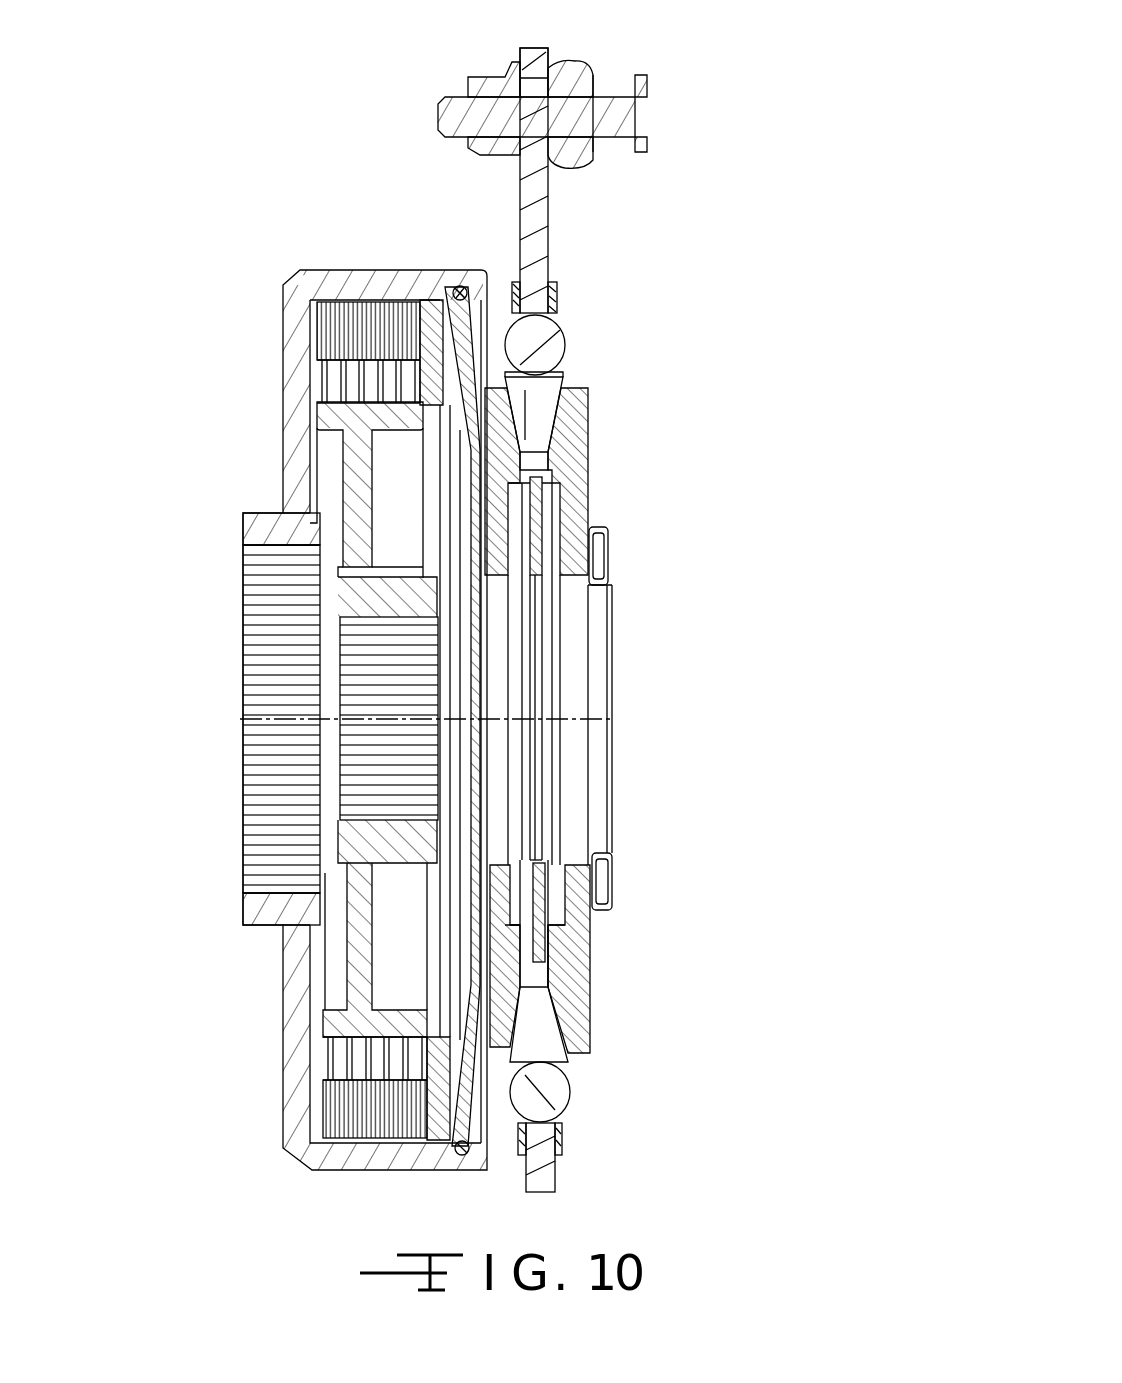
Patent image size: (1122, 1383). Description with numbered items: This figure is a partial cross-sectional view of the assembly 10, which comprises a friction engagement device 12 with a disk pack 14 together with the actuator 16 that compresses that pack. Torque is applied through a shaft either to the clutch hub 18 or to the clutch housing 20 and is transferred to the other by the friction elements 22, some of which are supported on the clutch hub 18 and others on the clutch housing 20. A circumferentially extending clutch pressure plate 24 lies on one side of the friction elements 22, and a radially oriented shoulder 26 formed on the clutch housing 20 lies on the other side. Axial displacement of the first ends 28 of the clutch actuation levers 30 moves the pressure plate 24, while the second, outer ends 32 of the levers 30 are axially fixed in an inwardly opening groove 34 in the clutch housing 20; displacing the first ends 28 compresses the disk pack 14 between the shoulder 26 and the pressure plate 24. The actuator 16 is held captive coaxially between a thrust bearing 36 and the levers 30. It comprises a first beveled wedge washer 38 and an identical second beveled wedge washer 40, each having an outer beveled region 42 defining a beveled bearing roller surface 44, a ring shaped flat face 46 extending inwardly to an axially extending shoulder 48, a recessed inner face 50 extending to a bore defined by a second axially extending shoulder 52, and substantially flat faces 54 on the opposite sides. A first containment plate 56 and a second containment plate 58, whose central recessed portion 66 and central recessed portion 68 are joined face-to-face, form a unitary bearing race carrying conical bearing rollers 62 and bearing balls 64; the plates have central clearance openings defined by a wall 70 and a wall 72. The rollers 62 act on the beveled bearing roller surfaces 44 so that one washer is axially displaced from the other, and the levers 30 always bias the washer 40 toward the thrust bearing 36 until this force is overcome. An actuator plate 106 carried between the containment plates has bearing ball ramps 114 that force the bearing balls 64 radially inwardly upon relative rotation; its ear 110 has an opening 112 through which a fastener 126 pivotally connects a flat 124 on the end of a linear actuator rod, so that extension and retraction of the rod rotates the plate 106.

The assembly 10 is at (707, 1150).
The friction engagement device 12 is at (327, 1175).
The disk pack 14 is at (320, 1097).
The actuator 16 is at (594, 386).
The clutch hub 18 is at (347, 907).
The clutch housing 20 is at (283, 418).
The friction elements 22 is at (318, 382).
The clutch pressure plate 24 is at (430, 302).
The shoulder 26 is at (318, 318).
The first ends 28 is at (447, 438).
The clutch actuation levers 30 is at (540, 348).
The second, outer ends 32 is at (455, 290).
The groove 34 is at (462, 1152).
The thrust bearing 36 is at (598, 530).
The first beveled wedge washer 38 is at (592, 1022).
The second beveled wedge washer 40 is at (540, 378).
The outer beveled region 42 is at (555, 425).
The beveled bearing roller surface 44 is at (575, 445).
The ring shaped flat face 46 is at (520, 455).
The axially extending shoulder 48 is at (600, 562).
The recessed inner face 50 is at (540, 500).
The second axially extending shoulder 52 is at (572, 860).
The flat faces 54 is at (548, 450).
The first bearing ball and conical bearing roller containment plate 56 is at (558, 300).
The second bearing ball and conical bearing roller containment plate 58 is at (546, 900).
The conical bearing rollers 62 is at (540, 393).
The bearing balls 64 is at (545, 335).
The central recessed portion 66 is at (605, 860).
The central recessed portion 68 is at (530, 905).
The wall 70 is at (540, 678).
The wall 72 is at (530, 695).
The actuator plate 106 is at (548, 194).
The ear 110 is at (530, 48).
The opening 112 is at (518, 90).
The bearing ball ramps 114 is at (510, 330).
The flat 124 is at (578, 66).
The fastener 126 is at (648, 110).